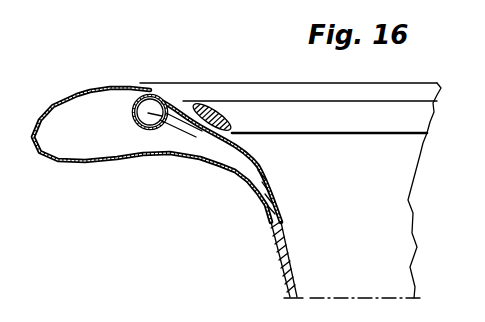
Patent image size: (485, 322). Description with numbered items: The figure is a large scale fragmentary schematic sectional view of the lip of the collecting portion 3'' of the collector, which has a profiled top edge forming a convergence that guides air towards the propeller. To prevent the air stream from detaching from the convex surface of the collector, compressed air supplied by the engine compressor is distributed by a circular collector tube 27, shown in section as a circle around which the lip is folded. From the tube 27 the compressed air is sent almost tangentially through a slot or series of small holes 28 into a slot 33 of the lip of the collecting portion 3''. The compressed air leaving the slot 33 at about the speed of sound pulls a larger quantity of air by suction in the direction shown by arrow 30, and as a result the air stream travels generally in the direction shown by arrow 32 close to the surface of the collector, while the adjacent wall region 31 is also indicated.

The collecting portion 3'' is at (165, 192).
The circular collector tube 27 is at (140, 124).
The slot or series of small holes 28 is at (187, 132).
The arrow 30 is at (178, 98).
The container wall 31 is at (230, 137).
The arrow 32 is at (318, 186).
The slot 33 is at (232, 136).